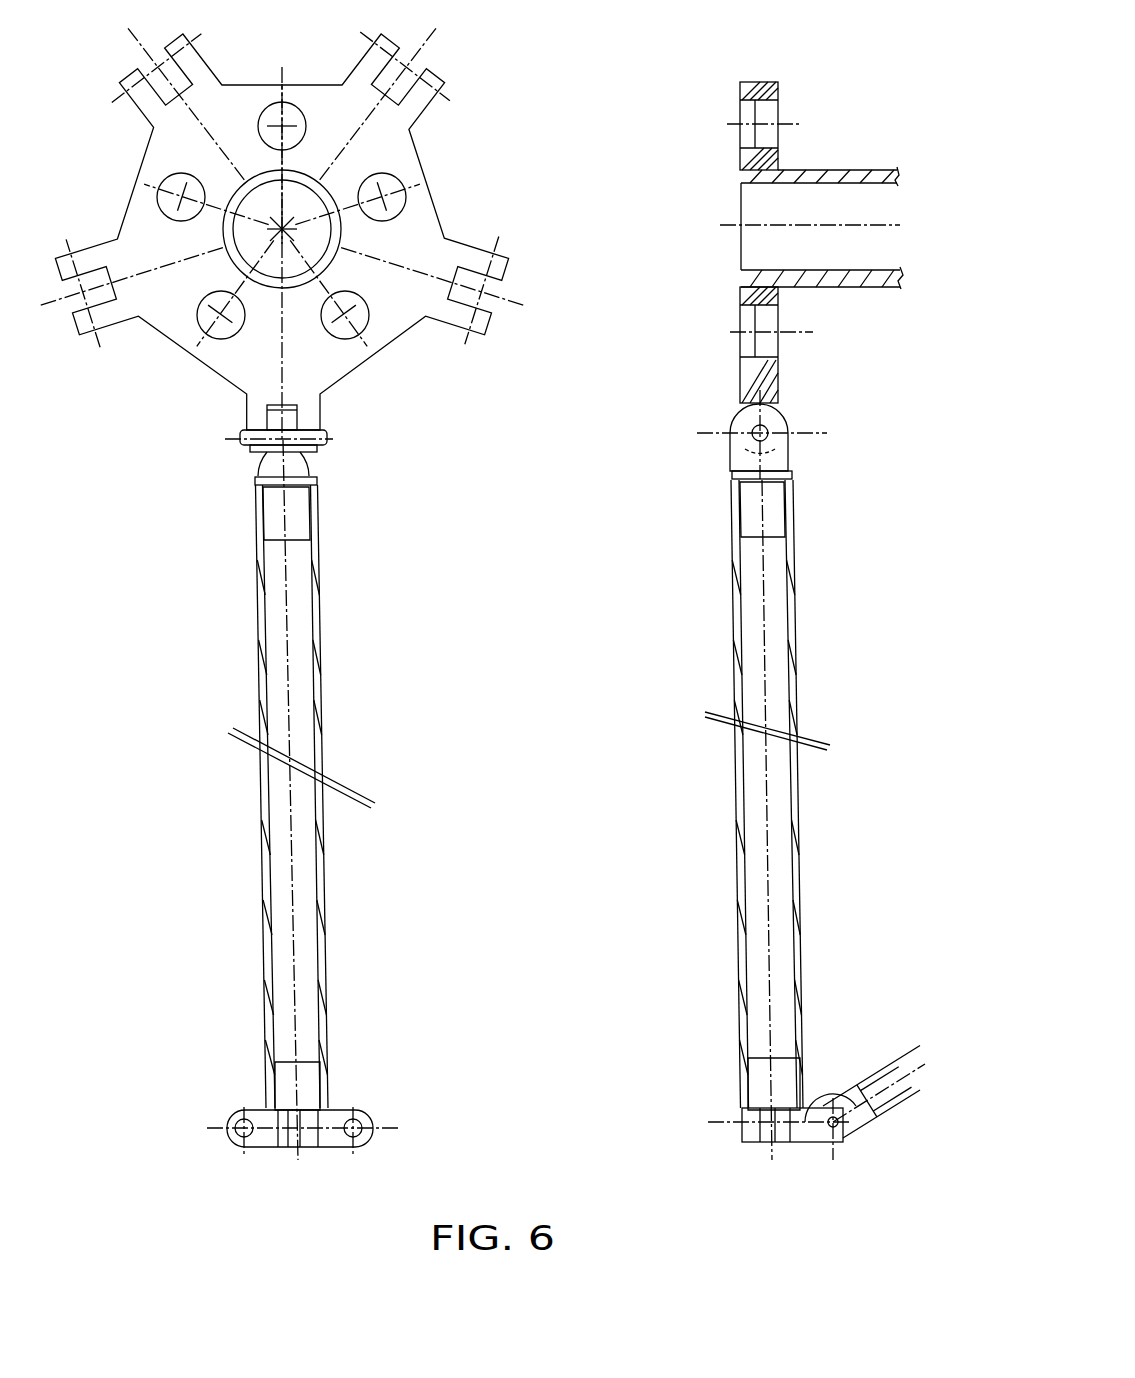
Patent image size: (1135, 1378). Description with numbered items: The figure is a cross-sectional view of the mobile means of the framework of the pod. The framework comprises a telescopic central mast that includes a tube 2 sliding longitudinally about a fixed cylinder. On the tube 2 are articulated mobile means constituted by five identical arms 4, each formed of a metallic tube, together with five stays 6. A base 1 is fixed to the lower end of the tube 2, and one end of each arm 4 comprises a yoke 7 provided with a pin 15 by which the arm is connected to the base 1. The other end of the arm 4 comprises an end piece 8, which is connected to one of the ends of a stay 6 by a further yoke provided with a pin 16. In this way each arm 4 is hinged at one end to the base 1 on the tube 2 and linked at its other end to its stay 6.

The base 1 is at (393, 143).
The tube 2 is at (740, 180).
The arm 4 is at (322, 867).
The stay 6 is at (890, 1070).
The yoke 7 is at (747, 415).
The end piece 8 is at (365, 1124).
The pin 15 is at (327, 436).
The pin 16 is at (807, 1120).